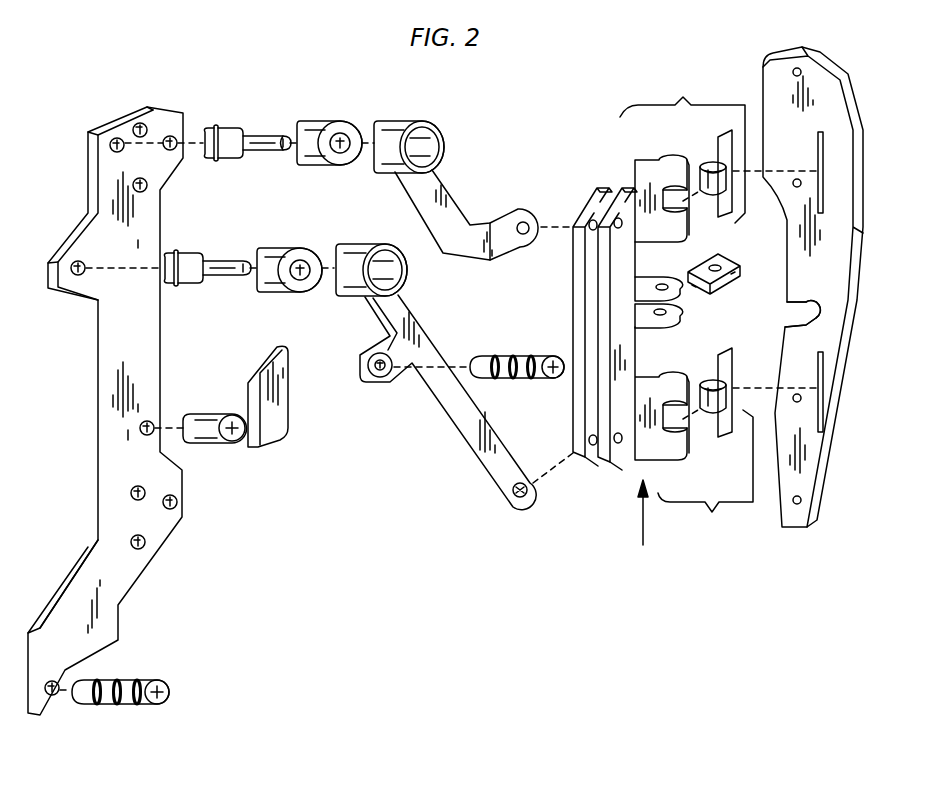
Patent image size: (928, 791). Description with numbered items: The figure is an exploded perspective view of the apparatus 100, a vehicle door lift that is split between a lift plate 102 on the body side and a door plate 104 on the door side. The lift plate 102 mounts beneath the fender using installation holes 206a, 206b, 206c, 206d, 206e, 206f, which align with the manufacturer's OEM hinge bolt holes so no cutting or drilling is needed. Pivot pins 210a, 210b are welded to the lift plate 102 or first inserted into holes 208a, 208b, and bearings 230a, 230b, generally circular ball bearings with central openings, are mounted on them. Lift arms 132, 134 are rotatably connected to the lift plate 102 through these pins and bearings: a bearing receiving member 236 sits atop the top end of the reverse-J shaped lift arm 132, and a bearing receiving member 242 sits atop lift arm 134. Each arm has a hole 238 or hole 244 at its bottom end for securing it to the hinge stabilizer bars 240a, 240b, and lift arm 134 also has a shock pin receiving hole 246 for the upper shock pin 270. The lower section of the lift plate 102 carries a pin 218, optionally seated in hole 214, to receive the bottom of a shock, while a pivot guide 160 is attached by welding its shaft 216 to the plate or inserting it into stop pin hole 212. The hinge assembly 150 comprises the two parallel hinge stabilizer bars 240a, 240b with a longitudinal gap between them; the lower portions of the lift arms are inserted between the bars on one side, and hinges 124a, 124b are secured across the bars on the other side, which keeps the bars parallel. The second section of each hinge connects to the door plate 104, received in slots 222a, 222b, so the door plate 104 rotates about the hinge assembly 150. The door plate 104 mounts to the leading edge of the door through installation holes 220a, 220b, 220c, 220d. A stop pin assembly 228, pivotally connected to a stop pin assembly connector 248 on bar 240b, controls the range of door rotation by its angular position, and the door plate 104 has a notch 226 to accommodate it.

The apparatus 100 is at (489, 79).
The lift plate 102 is at (112, 428).
The door plate 104 is at (835, 286).
The hinge 124a is at (682, 178).
The hinge 124b is at (694, 432).
The lift arm 132 is at (450, 204).
The lift arm 134 is at (452, 434).
The hinge assembly 150 is at (657, 568).
The pivot guide 160 is at (278, 430).
The installation hole 206a is at (143, 547).
The installation hole 206b is at (146, 492).
The installation hole 206c is at (177, 503).
The installation hole 206d is at (142, 127).
The installation hole 206e is at (150, 186).
The installation hole 206f is at (173, 137).
The hole 208a is at (112, 150).
The hole 208b is at (77, 275).
The pivot pin 210a is at (258, 138).
The pivot pin 210b is at (211, 262).
The stop pin hole 212 is at (153, 423).
The hole 214 is at (49, 697).
The shaft 216 is at (207, 413).
The pin 218 is at (166, 688).
The installation hole 220a is at (798, 69).
The installation hole 220b is at (803, 183).
The installation hole 220c is at (802, 400).
The installation hole 220d is at (802, 500).
The slot 222a is at (823, 143).
The slot 222b is at (823, 368).
The notch 226 is at (793, 312).
The stop pin assembly 228 is at (730, 253).
The bearing 230a is at (312, 128).
The bearing 230b is at (275, 248).
The bearing receiving member 236 is at (393, 124).
The hole 238 is at (528, 218).
The hinge stabilizer bar 240a is at (598, 186).
The hinge stabilizer bar 240b is at (622, 187).
The bearing receiving member 242 is at (358, 244).
The hole 244 is at (527, 500).
The shock pin receiving hole 246 is at (365, 357).
The stop pin assembly connector 248 is at (683, 277).
The upper shock pin 270 is at (515, 355).